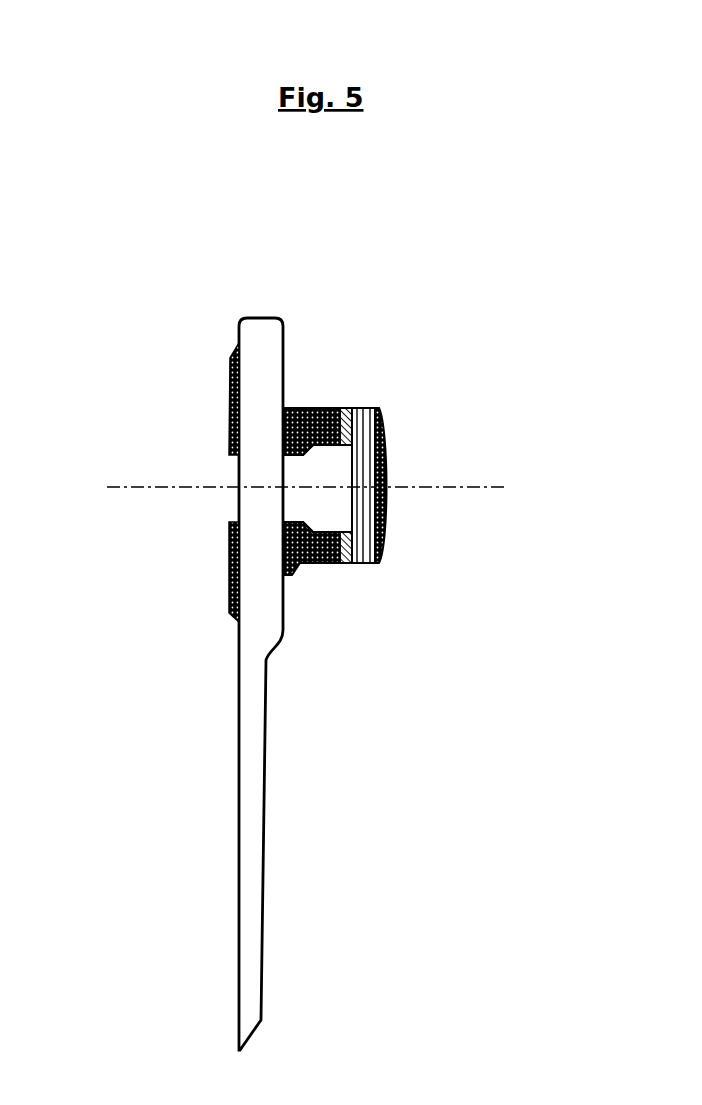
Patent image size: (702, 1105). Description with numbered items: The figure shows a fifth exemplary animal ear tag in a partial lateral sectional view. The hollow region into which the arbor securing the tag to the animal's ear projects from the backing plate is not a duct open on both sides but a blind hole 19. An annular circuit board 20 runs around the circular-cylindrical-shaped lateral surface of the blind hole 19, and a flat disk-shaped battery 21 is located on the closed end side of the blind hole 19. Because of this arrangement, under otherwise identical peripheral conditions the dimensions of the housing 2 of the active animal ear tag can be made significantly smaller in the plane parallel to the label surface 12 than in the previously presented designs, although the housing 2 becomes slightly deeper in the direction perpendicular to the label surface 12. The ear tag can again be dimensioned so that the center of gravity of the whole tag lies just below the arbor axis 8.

The arbor axis 8 is at (190, 487).
The label surface 12 is at (243, 863).
The housing 2 is at (322, 563).
The blind hole 19 is at (320, 475).
The annular circuit board 20 is at (357, 407).
The flat disk-shaped battery 21 is at (363, 478).